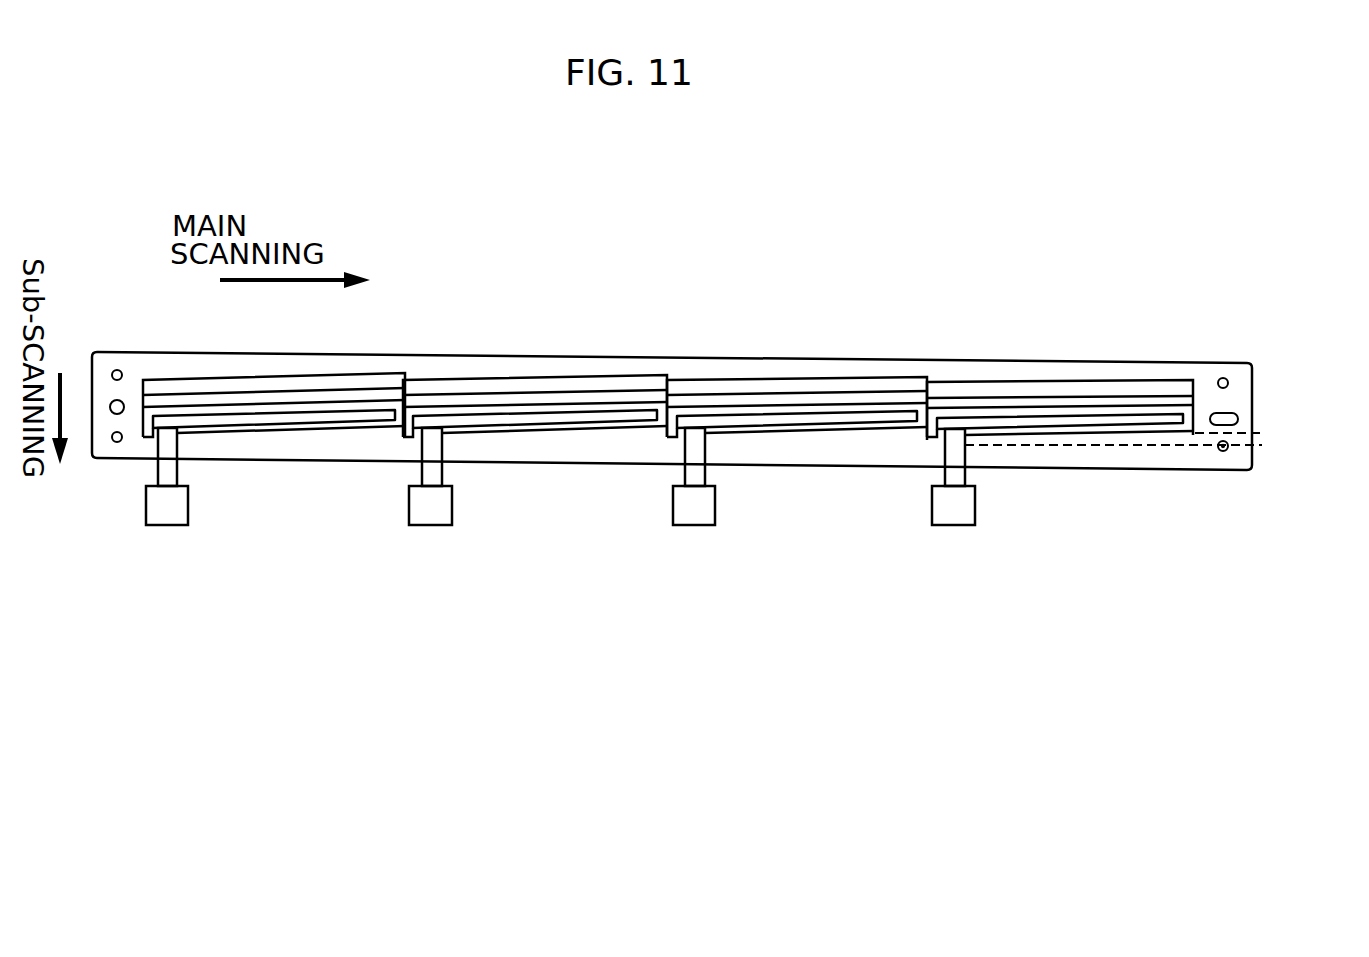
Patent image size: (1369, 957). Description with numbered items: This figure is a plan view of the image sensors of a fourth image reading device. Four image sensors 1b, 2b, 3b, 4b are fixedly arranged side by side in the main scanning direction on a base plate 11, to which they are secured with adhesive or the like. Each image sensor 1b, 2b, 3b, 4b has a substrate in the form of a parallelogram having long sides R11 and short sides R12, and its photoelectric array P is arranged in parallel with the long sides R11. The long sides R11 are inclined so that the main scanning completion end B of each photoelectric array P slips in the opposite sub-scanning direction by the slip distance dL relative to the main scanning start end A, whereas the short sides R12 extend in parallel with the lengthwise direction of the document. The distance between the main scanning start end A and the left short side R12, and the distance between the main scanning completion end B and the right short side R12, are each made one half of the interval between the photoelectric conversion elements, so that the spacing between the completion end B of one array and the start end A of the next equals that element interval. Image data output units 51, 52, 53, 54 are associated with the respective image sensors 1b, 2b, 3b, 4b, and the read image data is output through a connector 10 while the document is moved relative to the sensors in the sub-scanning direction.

The base plate 11 is at (428, 355).
The image sensor 1b is at (274, 407).
The image sensor 2b is at (535, 408).
The image sensor 3b is at (797, 408).
The image sensor 4b is at (1060, 413).
The photoelectric array P is at (238, 388).
The image data output unit 51 is at (307, 424).
The image data output unit 52 is at (567, 424).
The image data output unit 53 is at (800, 427).
The image data output unit 54 is at (1063, 426).
The connector 10 is at (167, 525).
The main scanning start end A is at (918, 402).
The main scanning completion end B is at (1203, 401).
The long side R11 is at (1128, 382).
The short side R12 is at (918, 437).
The slip distance dL is at (1270, 403).